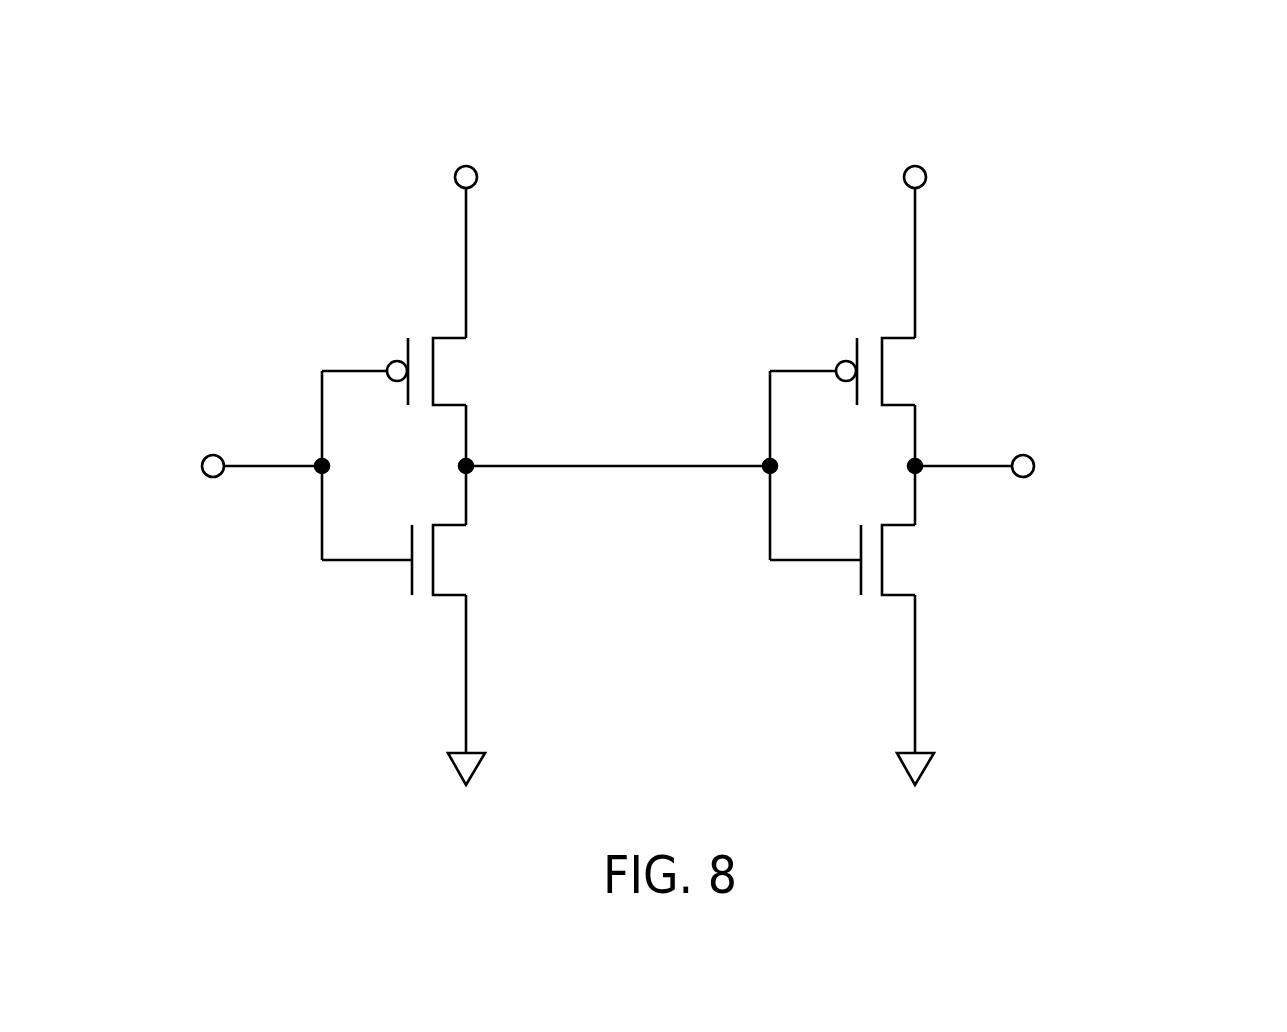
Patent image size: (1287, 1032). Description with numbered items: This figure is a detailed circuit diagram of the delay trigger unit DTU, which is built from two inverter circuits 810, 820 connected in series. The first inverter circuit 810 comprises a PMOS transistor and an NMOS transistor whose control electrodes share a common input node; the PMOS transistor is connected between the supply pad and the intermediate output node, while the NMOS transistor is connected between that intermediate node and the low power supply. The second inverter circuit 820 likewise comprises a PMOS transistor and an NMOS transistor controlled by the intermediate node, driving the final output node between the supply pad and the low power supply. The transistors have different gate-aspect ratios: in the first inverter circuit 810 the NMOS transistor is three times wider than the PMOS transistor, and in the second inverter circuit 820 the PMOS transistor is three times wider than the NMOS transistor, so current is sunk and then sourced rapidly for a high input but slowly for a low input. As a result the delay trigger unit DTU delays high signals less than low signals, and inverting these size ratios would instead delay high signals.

The inverter circuit 810 is at (353, 298).
The inverter circuit 820 is at (802, 298).
The delay trigger unit DTU is at (1106, 113).